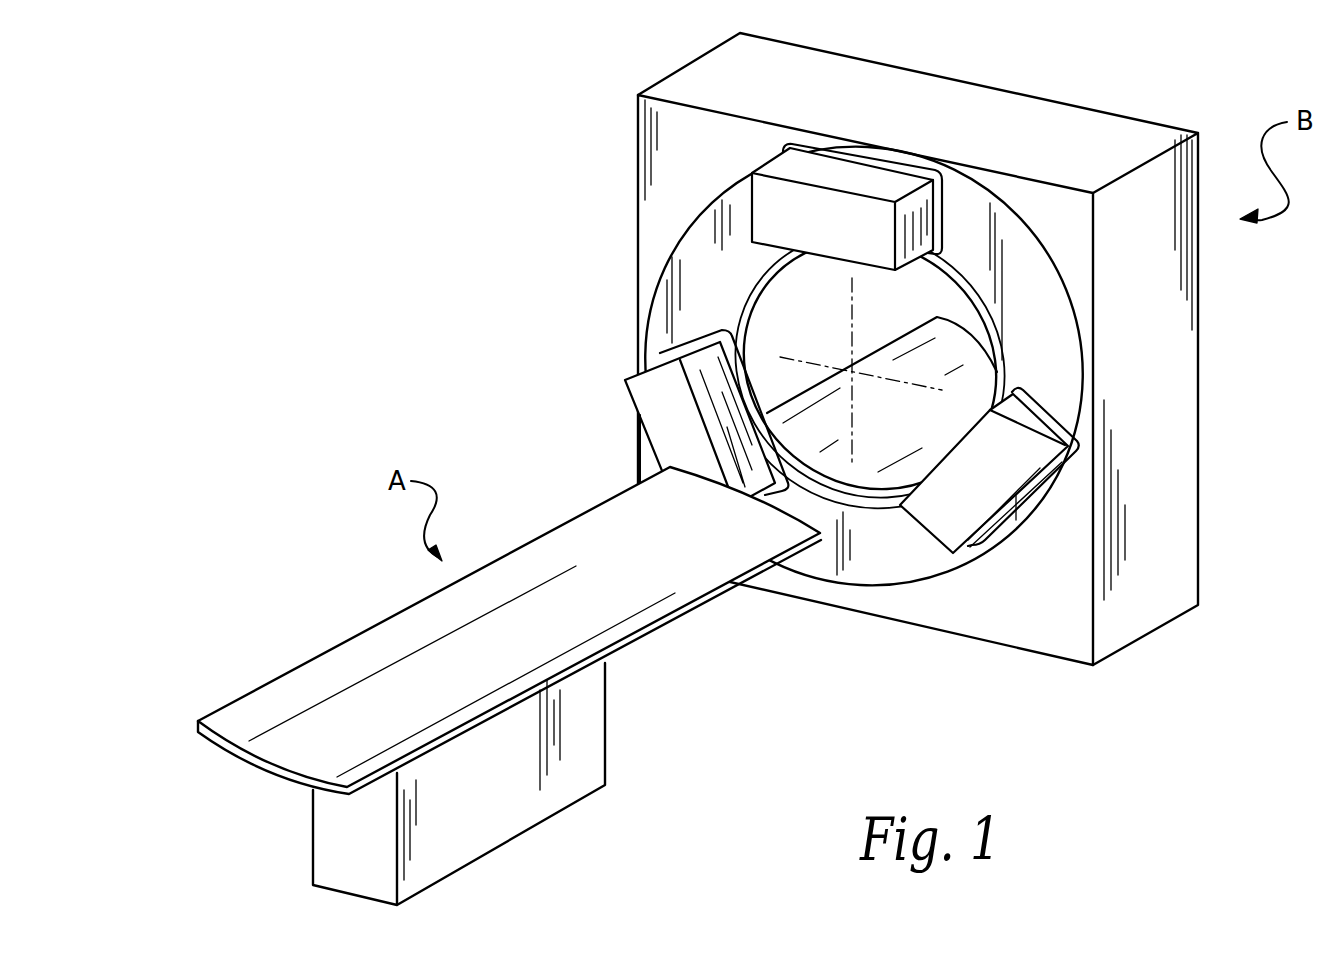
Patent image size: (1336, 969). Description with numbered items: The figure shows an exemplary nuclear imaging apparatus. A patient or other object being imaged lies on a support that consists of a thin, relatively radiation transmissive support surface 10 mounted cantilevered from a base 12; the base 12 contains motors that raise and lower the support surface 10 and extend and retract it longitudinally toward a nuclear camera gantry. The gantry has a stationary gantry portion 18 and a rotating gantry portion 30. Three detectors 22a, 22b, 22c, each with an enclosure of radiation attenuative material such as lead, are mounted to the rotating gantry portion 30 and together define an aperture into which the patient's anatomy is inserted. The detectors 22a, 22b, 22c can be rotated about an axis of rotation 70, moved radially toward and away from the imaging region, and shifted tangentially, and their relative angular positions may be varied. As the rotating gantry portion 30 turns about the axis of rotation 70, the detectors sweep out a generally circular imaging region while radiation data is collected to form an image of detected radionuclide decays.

The support surface 10 is at (344, 670).
The base 12 is at (483, 792).
The stationary gantry portion 18 is at (1167, 479).
The rotating gantry portion 30 is at (1042, 325).
The detector 22a is at (800, 228).
The detector 22b is at (957, 498).
The detector 22c is at (677, 428).
The axis of rotation 70 is at (852, 370).